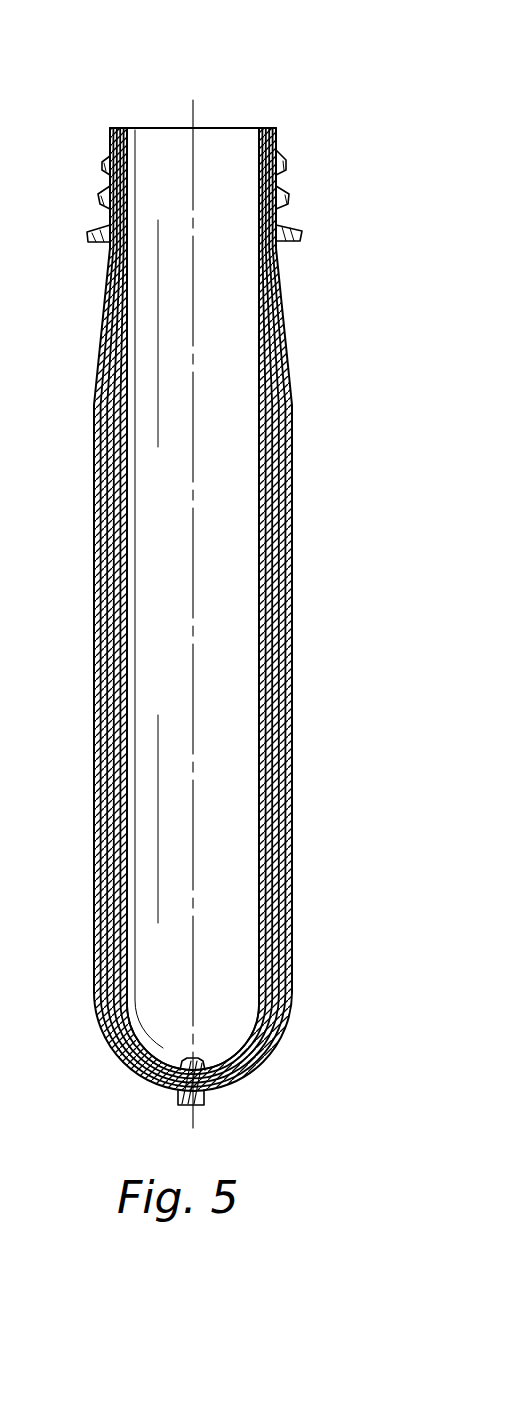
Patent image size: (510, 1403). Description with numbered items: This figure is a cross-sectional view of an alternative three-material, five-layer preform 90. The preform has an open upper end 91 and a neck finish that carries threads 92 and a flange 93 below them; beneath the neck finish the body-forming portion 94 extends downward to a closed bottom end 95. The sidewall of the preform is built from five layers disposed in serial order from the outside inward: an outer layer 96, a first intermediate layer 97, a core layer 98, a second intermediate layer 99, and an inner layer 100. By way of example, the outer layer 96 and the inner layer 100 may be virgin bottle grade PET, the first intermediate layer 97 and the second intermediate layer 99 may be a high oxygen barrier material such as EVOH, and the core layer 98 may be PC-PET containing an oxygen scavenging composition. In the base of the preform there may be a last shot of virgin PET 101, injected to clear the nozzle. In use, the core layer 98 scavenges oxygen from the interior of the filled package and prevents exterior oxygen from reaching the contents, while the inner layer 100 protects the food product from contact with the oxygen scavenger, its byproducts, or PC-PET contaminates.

The five-layer preform 90 is at (302, 344).
The open upper end 91 is at (228, 130).
The threads 92 is at (284, 166).
The flange 93 is at (303, 242).
The body-forming portion 94 is at (290, 489).
The closed bottom end 95 is at (247, 1075).
The outer layer 96 is at (96, 432).
The first intermediate layer 97 is at (103, 450).
The core layer 98 is at (110, 478).
The second intermediate layer 99 is at (116, 518).
The inner layer 100 is at (122, 572).
The last shot of virgin PET 101 is at (210, 1094).